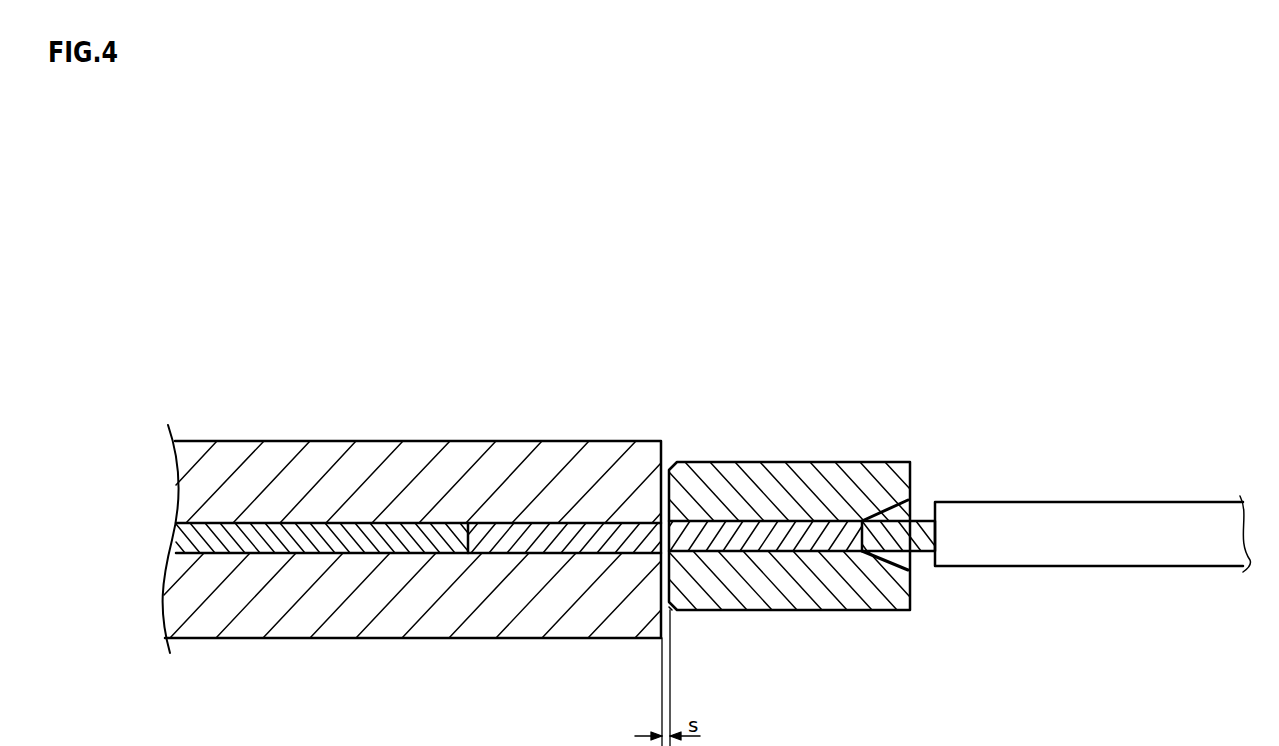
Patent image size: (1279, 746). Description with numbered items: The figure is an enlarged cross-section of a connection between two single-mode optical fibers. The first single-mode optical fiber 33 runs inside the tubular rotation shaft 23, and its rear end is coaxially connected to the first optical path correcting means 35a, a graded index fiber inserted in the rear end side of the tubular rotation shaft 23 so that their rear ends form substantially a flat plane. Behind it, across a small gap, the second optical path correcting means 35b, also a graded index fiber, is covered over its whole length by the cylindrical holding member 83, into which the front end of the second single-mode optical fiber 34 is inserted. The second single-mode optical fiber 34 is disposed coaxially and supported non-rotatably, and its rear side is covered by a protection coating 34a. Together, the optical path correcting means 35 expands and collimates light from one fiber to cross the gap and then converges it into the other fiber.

The tubular rotation shaft 23 is at (326, 638).
The first single-mode optical fiber 33 is at (380, 533).
The optical path correcting means 35 is at (519, 446).
The first optical path correcting means 35a is at (562, 533).
The second optical path correcting means 35b is at (727, 537).
The cylindrical holding member 83 is at (818, 461).
The second single-mode optical fiber 34 is at (920, 530).
The protection coating 34a is at (1097, 502).